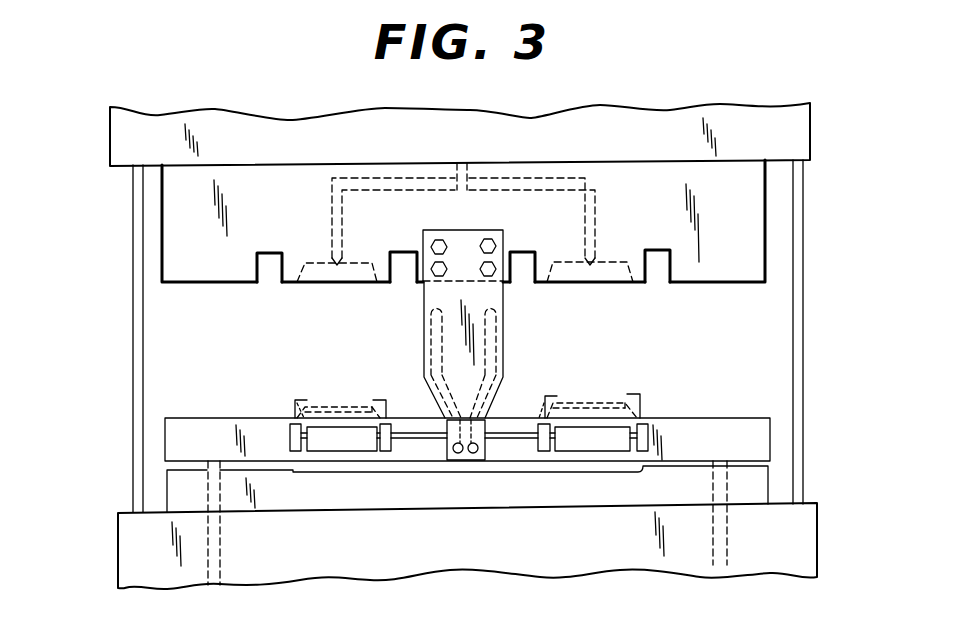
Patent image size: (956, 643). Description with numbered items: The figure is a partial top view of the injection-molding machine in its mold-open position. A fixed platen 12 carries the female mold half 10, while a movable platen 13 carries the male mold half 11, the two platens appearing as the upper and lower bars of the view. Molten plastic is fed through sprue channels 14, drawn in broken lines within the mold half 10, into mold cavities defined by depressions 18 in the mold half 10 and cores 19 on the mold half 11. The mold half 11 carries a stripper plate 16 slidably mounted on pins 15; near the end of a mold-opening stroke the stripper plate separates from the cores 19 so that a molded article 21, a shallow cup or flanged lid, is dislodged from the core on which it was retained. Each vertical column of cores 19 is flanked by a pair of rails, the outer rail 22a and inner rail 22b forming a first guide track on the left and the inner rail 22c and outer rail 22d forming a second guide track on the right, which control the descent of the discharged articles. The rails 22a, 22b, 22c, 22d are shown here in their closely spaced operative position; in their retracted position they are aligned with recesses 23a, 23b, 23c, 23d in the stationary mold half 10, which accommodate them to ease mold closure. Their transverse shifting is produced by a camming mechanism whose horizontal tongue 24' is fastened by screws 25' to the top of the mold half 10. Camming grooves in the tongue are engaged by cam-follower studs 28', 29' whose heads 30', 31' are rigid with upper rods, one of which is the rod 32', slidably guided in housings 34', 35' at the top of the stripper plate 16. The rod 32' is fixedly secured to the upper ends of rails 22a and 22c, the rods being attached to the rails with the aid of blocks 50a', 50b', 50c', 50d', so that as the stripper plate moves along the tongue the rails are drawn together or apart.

The female mold half 10 is at (181, 276).
The male mold half 11 is at (177, 492).
The fixed platen 12 is at (118, 143).
The movable platen 13 is at (130, 556).
The sprue channels 14 is at (340, 207).
The pins 15 is at (218, 548).
The stripper plate 16 is at (176, 427).
The depressions 18 is at (357, 262).
The cores 19 is at (295, 413).
The molded article 21 is at (297, 400).
The outer rail of left-hand guide track 22a is at (304, 400).
The inner rail of left-hand guide track 22b is at (384, 398).
The inner rail of right-hand guide track 22c is at (556, 395).
The outer rail of right-hand guide track 22d is at (633, 393).
The recess 23a is at (270, 280).
The recess 23b is at (410, 280).
The recess 23c is at (520, 278).
The recess 23d is at (658, 275).
The tongue 24' is at (440, 350).
The screws 25' is at (463, 241).
The cam-follower stud 28' is at (435, 492).
The cam-follower stud 29' is at (484, 492).
The head 30' is at (424, 448).
The head 31' is at (509, 447).
The rod 32' is at (489, 462).
The housing 34' is at (592, 484).
The housing 35' is at (341, 465).
The block 50a' is at (272, 443).
The block 50b' is at (384, 464).
The block 50c' is at (562, 464).
The block 50d' is at (653, 464).